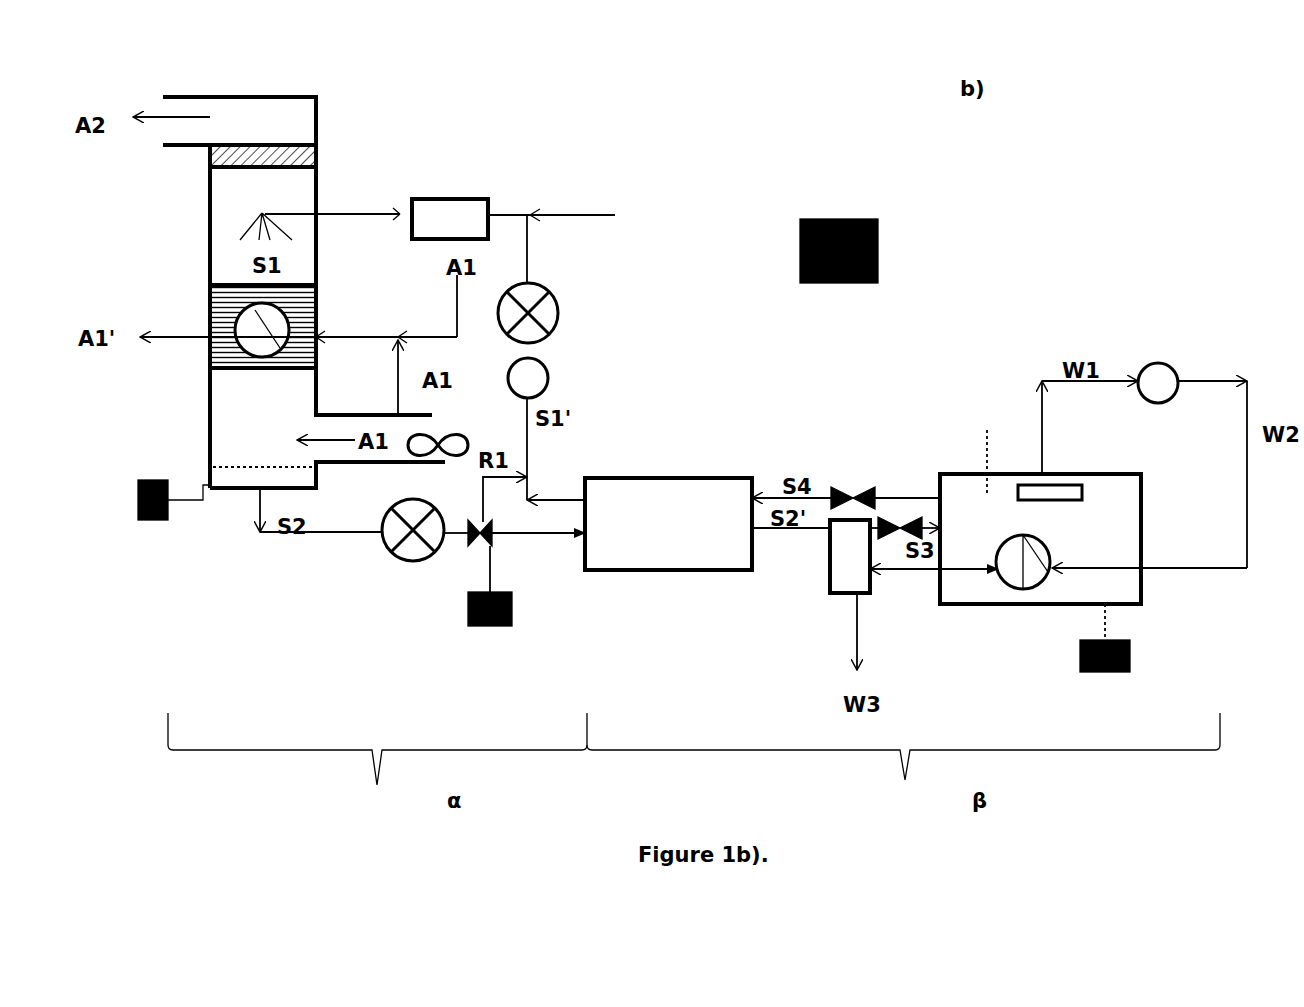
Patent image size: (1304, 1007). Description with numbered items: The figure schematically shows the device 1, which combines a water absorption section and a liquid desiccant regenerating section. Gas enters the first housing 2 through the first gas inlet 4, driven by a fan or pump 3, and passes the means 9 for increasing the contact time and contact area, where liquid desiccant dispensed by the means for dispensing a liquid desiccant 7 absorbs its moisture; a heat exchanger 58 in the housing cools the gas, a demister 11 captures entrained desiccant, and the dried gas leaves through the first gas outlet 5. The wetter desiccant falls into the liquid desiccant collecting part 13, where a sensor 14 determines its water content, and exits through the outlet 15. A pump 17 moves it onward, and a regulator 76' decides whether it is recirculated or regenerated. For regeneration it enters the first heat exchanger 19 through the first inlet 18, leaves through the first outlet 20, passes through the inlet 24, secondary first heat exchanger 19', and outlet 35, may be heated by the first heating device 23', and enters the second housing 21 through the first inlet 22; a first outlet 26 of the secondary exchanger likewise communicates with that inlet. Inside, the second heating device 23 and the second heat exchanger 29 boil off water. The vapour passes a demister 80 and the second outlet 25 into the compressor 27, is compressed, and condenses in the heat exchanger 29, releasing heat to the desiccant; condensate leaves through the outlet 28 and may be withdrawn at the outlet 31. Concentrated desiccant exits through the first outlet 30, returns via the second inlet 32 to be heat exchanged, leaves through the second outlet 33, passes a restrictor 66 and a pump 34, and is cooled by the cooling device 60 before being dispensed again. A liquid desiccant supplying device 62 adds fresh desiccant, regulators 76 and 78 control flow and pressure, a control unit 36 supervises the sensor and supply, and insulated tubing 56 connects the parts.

The device 1 is at (729, 118).
The first housing 2 is at (173, 278).
The fan or pump 3 is at (447, 431).
The first gas inlet 4 is at (330, 420).
The first gas outlet 5 is at (153, 95).
The means for dispensing a liquid desiccant 7 is at (237, 213).
The means for increasing the contact time and/or contact area 9 is at (198, 310).
The demister 11 is at (279, 158).
The liquid desiccant collecting part 13 is at (200, 472).
The sensor 14 is at (147, 503).
The outlet 15 is at (252, 500).
The pump 17 is at (413, 557).
The first inlet 18 is at (578, 547).
The first heat exchanger 19 is at (668, 565).
The secondary first heat exchanger 19' is at (928, 686).
The first outlet 20 is at (755, 543).
The second housing 21 is at (1145, 625).
The first inlet 22 is at (944, 543).
The second heating device 23 is at (1105, 660).
The first heating device 23' is at (490, 606).
The inlet 24 is at (823, 542).
The second outlet 25 is at (1052, 462).
The first outlet 26 is at (877, 545).
The compressor 27 is at (1157, 370).
The outlet 28 is at (993, 580).
The second heat exchanger 29 is at (1062, 558).
The first outlet 30 is at (938, 478).
The outlet 31 is at (837, 635).
The second inlet 32 is at (760, 475).
The second outlet 33 is at (583, 492).
The pump 34 is at (548, 313).
The outlet 35 is at (884, 582).
The control unit 36 is at (839, 232).
The tubing 56 is at (518, 205).
The heat exchanger 58 is at (318, 297).
The cooling device 60 is at (450, 205).
The liquid desiccant supplying device 62 is at (746, 349).
The restrictor 66 is at (552, 377).
The regulator 76 is at (850, 461).
The regulator 76' is at (483, 525).
The regulator 78 is at (912, 522).
The demister 80 is at (1088, 492).